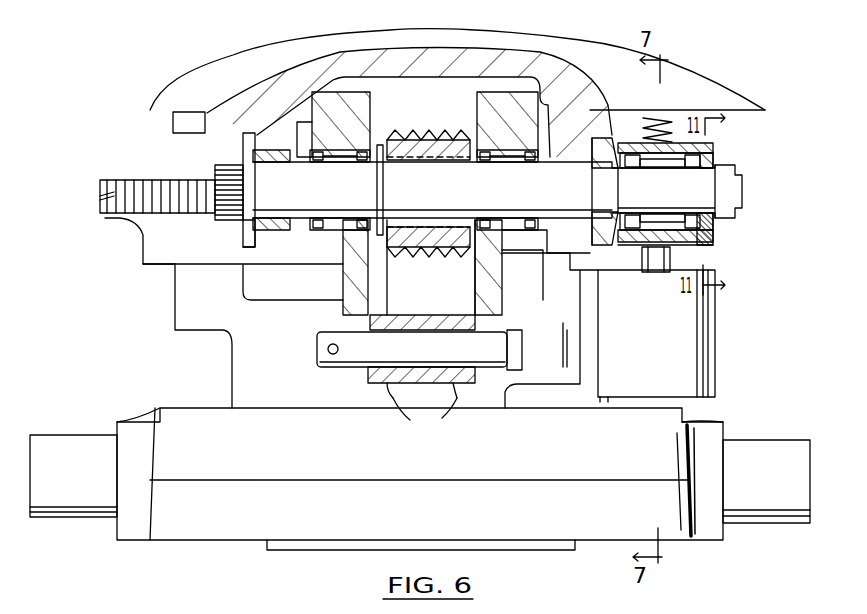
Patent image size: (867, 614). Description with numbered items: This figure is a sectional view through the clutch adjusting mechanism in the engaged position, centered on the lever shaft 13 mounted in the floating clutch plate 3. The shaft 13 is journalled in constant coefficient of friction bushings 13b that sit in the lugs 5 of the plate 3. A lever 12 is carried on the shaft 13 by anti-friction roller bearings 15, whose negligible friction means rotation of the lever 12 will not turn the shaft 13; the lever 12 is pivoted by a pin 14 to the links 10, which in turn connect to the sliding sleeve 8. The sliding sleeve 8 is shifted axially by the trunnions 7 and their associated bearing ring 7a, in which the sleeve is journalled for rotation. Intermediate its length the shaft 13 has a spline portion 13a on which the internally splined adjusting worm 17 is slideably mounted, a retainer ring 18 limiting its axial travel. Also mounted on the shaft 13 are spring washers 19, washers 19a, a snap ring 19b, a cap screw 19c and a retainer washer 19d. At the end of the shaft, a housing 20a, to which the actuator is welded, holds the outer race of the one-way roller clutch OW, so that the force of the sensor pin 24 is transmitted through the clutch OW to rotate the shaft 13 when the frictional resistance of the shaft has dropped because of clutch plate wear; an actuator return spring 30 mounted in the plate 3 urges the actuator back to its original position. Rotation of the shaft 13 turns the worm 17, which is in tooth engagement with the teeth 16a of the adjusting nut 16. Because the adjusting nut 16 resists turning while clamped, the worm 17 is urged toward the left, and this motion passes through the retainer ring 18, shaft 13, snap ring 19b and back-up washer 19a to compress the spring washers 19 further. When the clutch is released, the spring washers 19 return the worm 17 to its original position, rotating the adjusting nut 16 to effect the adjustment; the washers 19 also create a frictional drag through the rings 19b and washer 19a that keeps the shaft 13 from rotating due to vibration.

The floating clutch plate 3 is at (268, 96).
The lugs 5 is at (300, 262).
The trunnions 7 is at (82, 436).
The bearing ring 7a is at (155, 402).
The sliding sleeve 8 is at (410, 313).
The links 10 is at (425, 417).
The lever means 12 is at (320, 92).
The lever shaft 13 is at (534, 204).
The spline portion 13a is at (414, 150).
The constant coefficient of friction bushings 13b is at (271, 230).
The pin 14 is at (316, 346).
The anti-friction roller bearings 15 is at (340, 157).
The adjusting nut 16 is at (107, 216).
The adjusting nut teeth 16a is at (103, 197).
The adjusting worm 17 is at (448, 134).
The retainer ring 18 is at (380, 145).
The spring washers 19 is at (600, 138).
The washers 19a is at (243, 238).
The snap ring 19b is at (718, 163).
The cap screw 19c is at (215, 172).
The retainer washer 19d is at (242, 155).
The housing 20a is at (703, 147).
The sensor pin 24 is at (644, 270).
The actuator return spring 30 is at (673, 118).
The one-way clutch OW is at (706, 241).